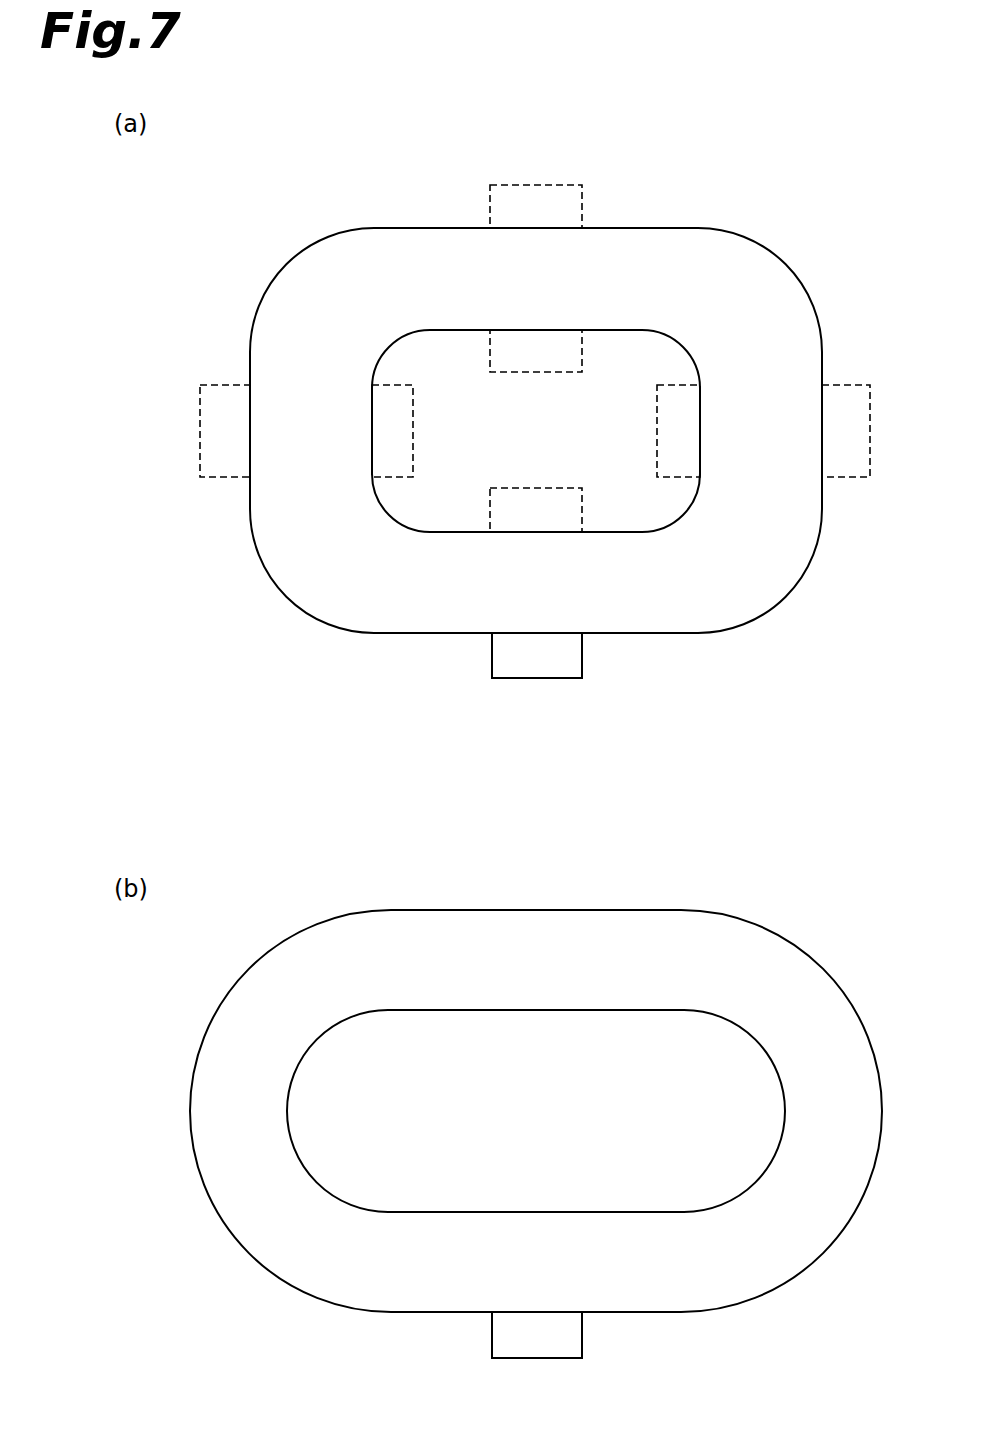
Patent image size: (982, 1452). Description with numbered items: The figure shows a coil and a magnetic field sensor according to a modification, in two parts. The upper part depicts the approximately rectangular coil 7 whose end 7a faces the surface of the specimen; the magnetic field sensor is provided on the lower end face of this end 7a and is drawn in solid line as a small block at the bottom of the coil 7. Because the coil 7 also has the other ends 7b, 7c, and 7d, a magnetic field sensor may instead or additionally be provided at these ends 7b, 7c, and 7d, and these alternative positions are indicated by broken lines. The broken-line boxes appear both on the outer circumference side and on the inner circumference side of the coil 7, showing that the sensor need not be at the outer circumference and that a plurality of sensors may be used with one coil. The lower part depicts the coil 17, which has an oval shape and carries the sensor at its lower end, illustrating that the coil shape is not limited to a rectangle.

The coil 7 is at (420, 250).
The end of the coil 7a is at (510, 596).
The end of the coil 7b is at (556, 280).
The end of the coil 7c is at (780, 405).
The end of the coil 7d is at (278, 408).
The coil 17 is at (412, 925).